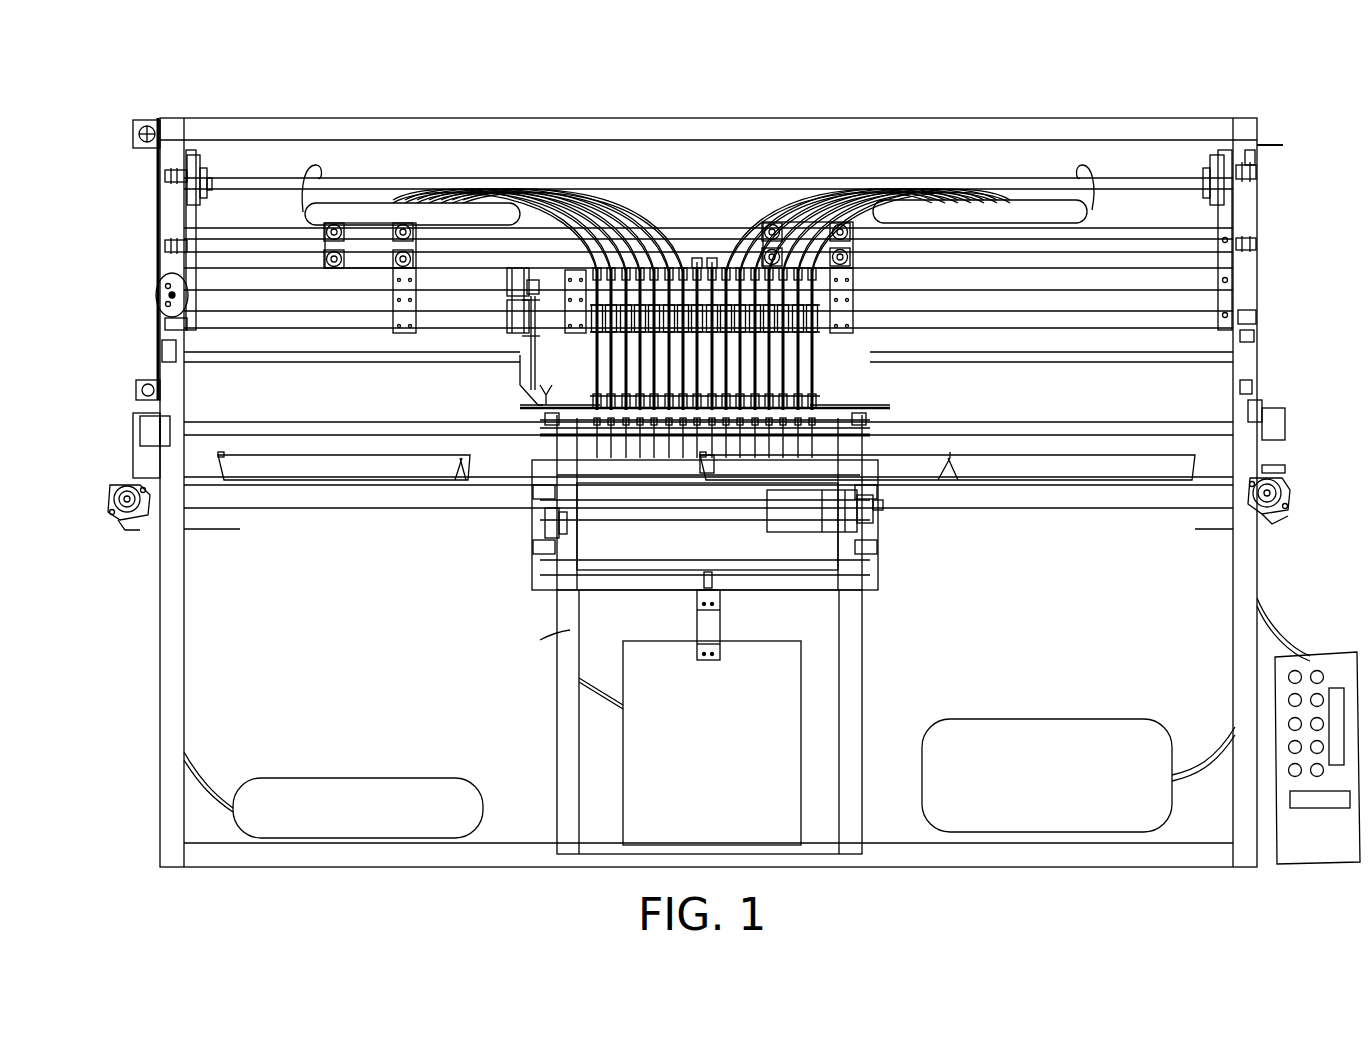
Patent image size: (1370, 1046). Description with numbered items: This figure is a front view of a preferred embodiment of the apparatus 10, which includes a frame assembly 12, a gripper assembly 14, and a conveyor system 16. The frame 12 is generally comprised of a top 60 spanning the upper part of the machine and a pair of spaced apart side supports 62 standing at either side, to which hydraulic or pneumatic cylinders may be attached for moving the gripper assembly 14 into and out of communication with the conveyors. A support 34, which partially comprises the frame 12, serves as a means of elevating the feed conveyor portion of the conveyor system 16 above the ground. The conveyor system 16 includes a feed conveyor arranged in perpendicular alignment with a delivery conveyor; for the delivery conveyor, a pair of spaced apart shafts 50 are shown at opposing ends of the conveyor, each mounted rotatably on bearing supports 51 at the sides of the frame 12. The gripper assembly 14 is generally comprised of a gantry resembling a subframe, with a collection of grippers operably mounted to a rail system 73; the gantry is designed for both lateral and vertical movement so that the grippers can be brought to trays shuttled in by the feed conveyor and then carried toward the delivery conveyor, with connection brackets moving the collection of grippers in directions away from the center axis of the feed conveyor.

The apparatus 10 is at (1062, 102).
The frame assembly 12 is at (1200, 127).
The gripper assembly 14 is at (690, 262).
The conveyor system 16 is at (880, 545).
The support 34 is at (575, 632).
The shafts 50 is at (135, 512).
The bearing supports 51 is at (120, 490).
The top 60 is at (230, 118).
The side supports 62 is at (176, 858).
The rail system 73 is at (1200, 282).